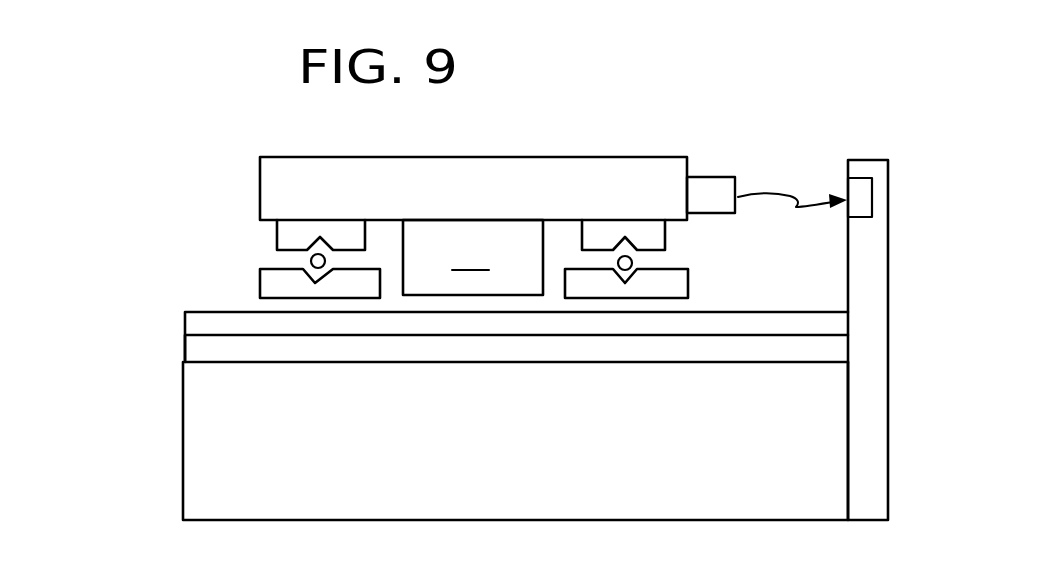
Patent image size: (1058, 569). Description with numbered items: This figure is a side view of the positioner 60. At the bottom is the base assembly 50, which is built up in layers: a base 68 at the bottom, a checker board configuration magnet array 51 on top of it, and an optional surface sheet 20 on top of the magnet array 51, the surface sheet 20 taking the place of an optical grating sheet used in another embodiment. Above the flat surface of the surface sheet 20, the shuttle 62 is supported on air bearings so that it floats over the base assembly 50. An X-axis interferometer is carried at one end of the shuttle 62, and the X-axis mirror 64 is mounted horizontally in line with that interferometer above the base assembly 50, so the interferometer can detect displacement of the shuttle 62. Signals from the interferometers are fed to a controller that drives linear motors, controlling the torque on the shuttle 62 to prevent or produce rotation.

The positioner 60 is at (130, 152).
The shuttle 62 is at (282, 157).
The surface sheet 20 is at (205, 312).
The magnet array 51 is at (185, 345).
The base 68 is at (193, 405).
The base assembly 50 is at (178, 457).
The X-axis mirror 64 is at (847, 190).